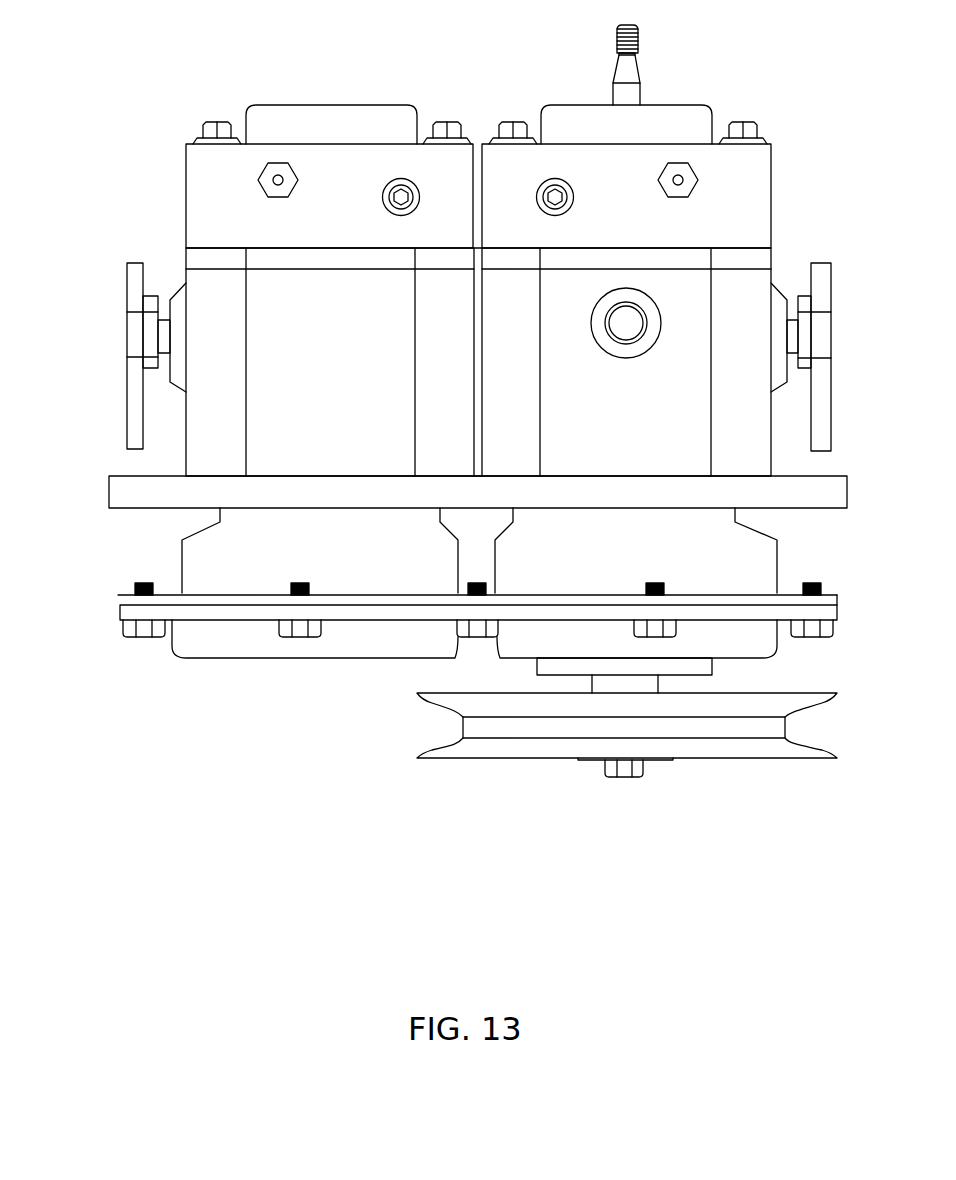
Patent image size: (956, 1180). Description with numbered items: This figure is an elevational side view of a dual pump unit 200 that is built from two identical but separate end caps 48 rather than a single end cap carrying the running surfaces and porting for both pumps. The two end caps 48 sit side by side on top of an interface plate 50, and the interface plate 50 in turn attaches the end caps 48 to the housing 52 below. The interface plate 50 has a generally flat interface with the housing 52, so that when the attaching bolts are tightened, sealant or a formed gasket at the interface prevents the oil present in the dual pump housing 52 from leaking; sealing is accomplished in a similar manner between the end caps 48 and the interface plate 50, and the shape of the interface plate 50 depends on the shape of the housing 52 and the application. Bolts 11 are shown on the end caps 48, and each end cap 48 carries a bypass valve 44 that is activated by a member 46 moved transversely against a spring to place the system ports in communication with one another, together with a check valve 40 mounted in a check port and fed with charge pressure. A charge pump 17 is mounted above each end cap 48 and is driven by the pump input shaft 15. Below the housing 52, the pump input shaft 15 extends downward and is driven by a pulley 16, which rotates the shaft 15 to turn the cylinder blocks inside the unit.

The dual pump unit 200 is at (123, 73).
The bolts 11 is at (216, 121).
The charge pump 17 is at (249, 109).
The end caps 48 is at (186, 196).
The interface plate 50 is at (186, 257).
The housing 52 is at (347, 378).
The bypass valve 44 is at (268, 195).
The member 46 is at (282, 177).
The check valves 40 is at (403, 206).
The pump input shaft 15 is at (658, 690).
The pulley 16 is at (433, 757).